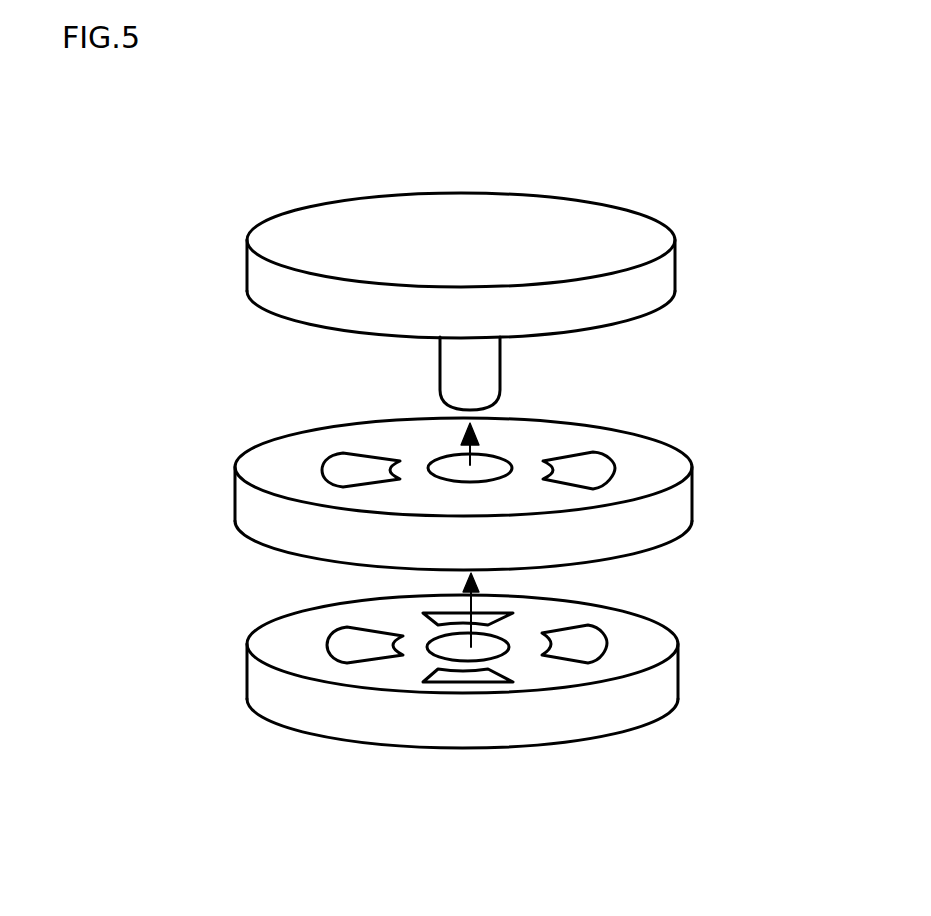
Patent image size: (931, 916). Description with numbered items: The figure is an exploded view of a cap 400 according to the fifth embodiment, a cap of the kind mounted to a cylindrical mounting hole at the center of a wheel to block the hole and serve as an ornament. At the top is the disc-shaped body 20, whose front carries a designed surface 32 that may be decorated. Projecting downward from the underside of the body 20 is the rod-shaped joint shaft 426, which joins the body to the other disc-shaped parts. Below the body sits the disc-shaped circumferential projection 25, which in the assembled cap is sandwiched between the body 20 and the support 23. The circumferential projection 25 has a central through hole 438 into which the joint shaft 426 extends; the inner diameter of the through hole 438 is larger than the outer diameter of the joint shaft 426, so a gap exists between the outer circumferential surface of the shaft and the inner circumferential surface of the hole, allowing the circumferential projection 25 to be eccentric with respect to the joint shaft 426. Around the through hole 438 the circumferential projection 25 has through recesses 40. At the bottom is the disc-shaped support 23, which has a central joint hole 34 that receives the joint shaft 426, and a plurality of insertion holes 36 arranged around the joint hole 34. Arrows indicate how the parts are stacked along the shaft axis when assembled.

The cap 400 is at (421, 767).
The body 20 is at (498, 231).
The designed surface 32 is at (532, 220).
The joint shaft 426 is at (487, 363).
The circumferential projection 25 is at (499, 481).
The through hole 438 is at (493, 462).
The through recesses 40 is at (598, 468).
The support 23 is at (494, 677).
The joint hole 34 is at (507, 658).
The insertion holes 36 is at (585, 645).